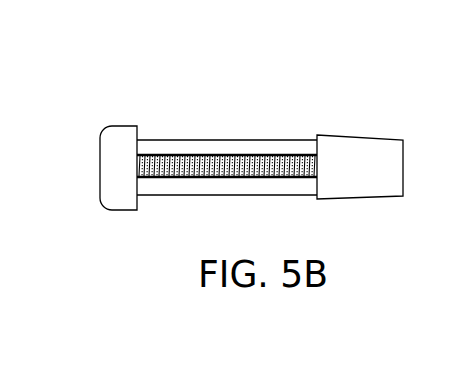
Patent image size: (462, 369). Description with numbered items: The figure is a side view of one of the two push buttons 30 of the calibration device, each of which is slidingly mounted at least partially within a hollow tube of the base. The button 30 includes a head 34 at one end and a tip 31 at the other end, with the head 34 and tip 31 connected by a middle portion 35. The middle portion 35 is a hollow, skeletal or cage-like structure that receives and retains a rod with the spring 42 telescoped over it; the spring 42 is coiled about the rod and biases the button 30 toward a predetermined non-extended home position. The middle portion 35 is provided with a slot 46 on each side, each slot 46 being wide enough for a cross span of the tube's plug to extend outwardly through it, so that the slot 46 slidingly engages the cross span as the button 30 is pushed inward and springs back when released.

The push button 30 is at (170, 98).
The tip 31 is at (350, 135).
The head 34 is at (122, 126).
The middle portion 35 is at (172, 196).
The spring 42 is at (222, 156).
The slot 46 is at (265, 177).